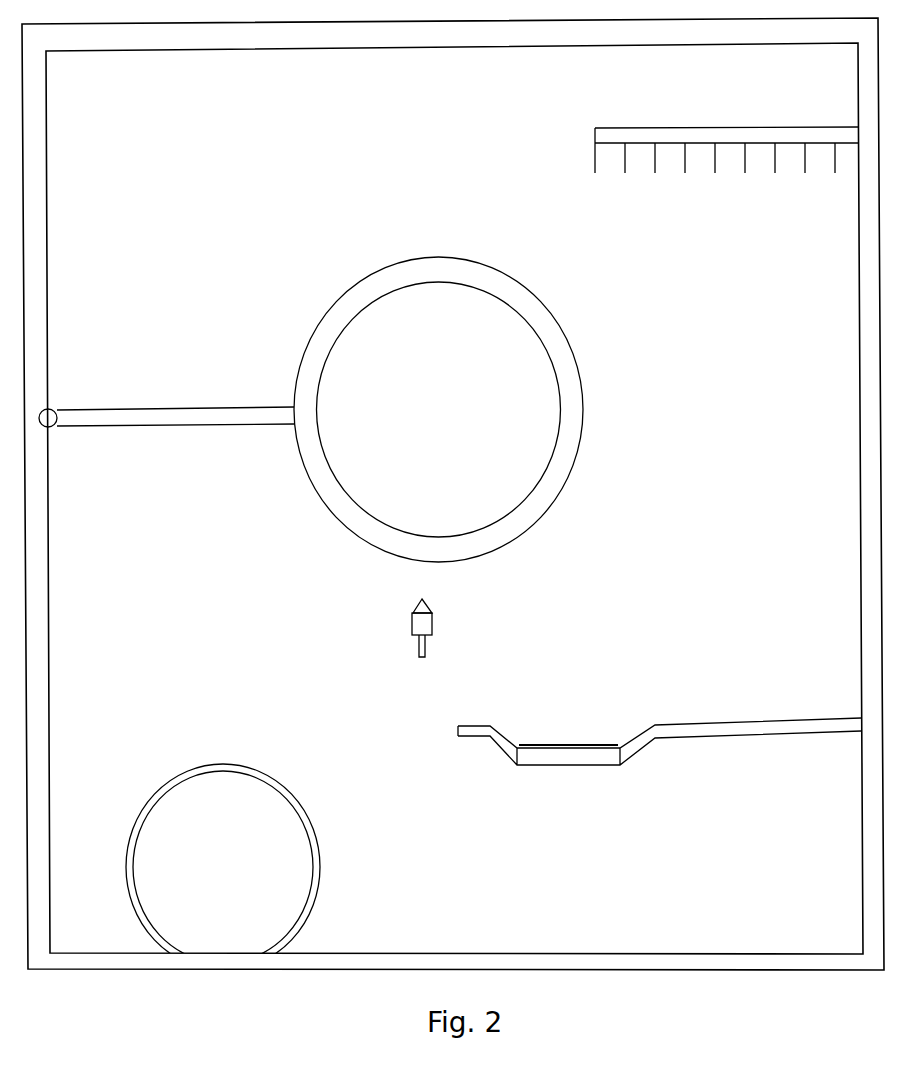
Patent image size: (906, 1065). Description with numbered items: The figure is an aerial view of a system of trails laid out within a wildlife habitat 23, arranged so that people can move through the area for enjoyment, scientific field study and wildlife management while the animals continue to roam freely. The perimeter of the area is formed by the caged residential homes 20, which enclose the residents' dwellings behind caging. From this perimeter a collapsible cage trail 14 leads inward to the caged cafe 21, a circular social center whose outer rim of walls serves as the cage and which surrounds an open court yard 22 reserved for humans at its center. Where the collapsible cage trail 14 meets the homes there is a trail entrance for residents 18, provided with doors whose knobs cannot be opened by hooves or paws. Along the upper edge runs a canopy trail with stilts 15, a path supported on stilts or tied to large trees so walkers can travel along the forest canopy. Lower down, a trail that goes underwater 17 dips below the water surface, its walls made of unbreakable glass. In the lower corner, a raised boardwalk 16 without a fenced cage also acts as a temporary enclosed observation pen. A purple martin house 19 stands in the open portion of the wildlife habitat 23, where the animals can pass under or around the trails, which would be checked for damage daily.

The collapsible cage trail 14 is at (158, 397).
The canopy trail with stilts 15 is at (662, 118).
The raised boardwalk 16 is at (160, 786).
The trail that goes underwater 17 is at (617, 735).
The trail entrance for residents 18 is at (56, 436).
The purple martin house 19 is at (440, 612).
The caged residential homes 20 is at (568, 62).
The caged cafe 21 is at (352, 276).
The court yard 22 is at (454, 433).
The wildlife habitat 23 is at (714, 348).